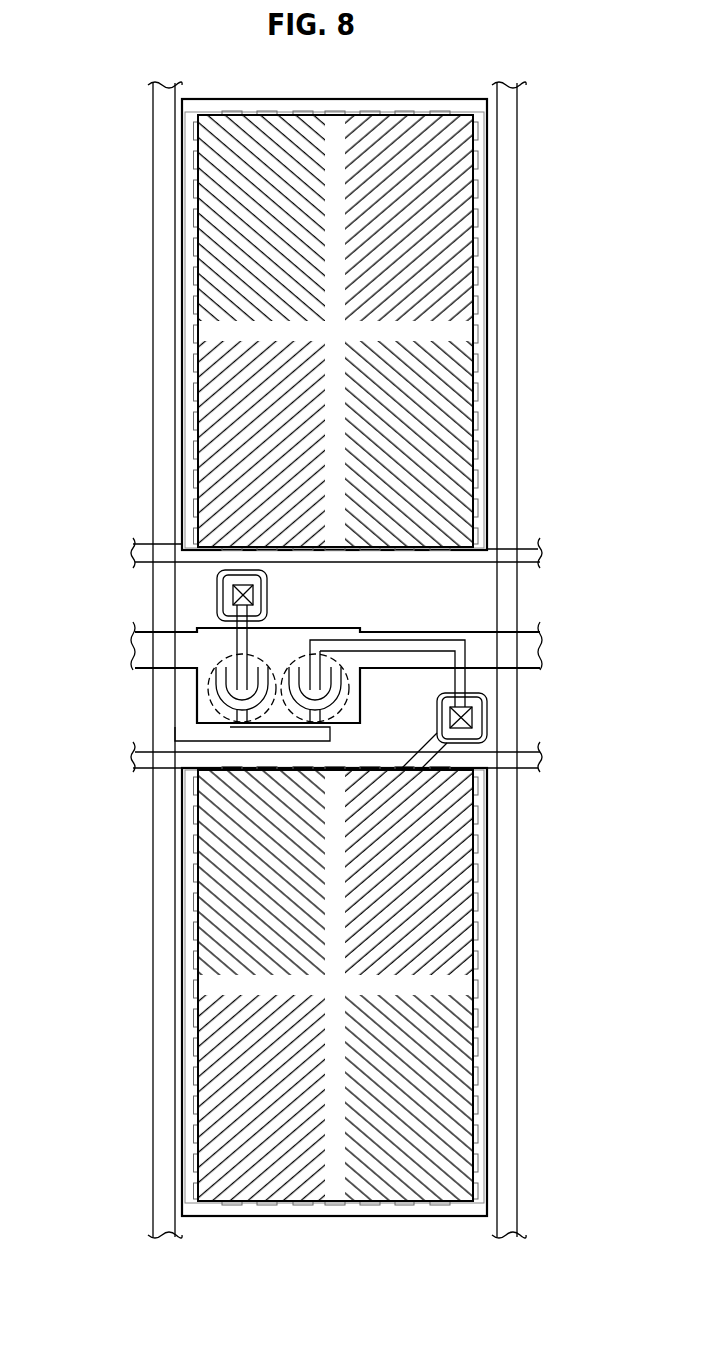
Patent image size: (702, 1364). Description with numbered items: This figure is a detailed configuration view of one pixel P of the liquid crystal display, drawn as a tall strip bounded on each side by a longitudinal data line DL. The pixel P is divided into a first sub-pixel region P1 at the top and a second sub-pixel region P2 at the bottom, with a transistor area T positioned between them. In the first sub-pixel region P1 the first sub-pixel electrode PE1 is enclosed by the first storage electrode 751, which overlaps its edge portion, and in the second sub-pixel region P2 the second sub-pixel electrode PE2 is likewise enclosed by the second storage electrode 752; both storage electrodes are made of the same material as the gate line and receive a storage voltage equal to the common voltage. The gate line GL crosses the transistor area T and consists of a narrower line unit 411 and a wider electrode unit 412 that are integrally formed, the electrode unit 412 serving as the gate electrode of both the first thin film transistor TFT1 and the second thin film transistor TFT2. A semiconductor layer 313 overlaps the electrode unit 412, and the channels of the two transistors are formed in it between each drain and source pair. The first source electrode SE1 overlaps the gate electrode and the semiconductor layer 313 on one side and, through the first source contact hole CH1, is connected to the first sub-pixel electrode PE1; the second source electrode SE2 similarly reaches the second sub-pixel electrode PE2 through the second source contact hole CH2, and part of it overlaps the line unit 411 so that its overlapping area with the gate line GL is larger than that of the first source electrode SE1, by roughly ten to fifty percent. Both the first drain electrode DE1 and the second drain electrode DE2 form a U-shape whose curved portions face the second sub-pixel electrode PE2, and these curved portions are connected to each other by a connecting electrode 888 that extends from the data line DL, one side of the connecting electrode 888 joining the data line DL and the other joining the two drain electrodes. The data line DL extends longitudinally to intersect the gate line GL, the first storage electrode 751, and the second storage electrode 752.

The data line DL is at (162, 326).
The first storage electrode 751 is at (182, 398).
The second storage electrode 752 is at (182, 899).
The first sub-pixel electrode PE1 is at (458, 332).
The second sub-pixel electrode PE2 is at (458, 985).
The first sub-pixel region P1 is at (336, 325).
The second sub-pixel region P2 is at (337, 992).
The pixel P is at (568, 452).
The gate line GL is at (277, 672).
The line unit 411 is at (145, 650).
The electrode unit 412 is at (203, 693).
The transistor area T is at (257, 669).
The first thin film transistor TFT1 is at (175, 667).
The second thin film transistor TFT2 is at (345, 701).
The first source electrode SE1 is at (244, 682).
The second source electrode SE2 is at (316, 683).
The first drain electrode DE1 is at (227, 702).
The second drain electrode DE2 is at (325, 703).
The first source contact hole CH1 is at (256, 596).
The second source contact hole CH2 is at (462, 708).
The semiconductor layer 313 is at (318, 660).
The connecting electrode 888 is at (188, 736).